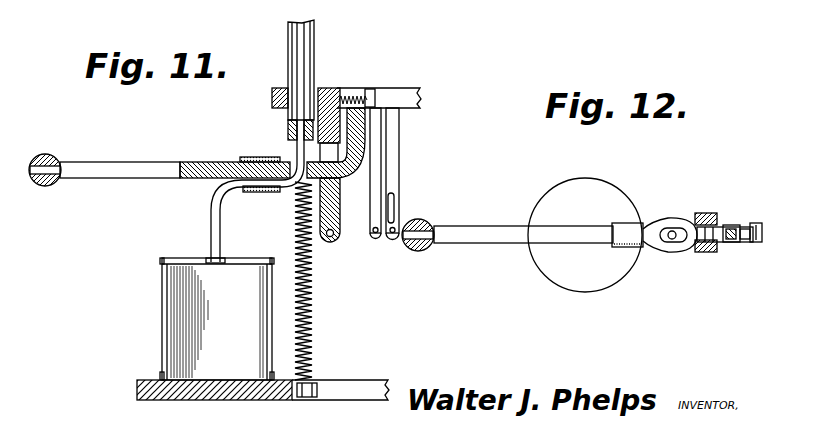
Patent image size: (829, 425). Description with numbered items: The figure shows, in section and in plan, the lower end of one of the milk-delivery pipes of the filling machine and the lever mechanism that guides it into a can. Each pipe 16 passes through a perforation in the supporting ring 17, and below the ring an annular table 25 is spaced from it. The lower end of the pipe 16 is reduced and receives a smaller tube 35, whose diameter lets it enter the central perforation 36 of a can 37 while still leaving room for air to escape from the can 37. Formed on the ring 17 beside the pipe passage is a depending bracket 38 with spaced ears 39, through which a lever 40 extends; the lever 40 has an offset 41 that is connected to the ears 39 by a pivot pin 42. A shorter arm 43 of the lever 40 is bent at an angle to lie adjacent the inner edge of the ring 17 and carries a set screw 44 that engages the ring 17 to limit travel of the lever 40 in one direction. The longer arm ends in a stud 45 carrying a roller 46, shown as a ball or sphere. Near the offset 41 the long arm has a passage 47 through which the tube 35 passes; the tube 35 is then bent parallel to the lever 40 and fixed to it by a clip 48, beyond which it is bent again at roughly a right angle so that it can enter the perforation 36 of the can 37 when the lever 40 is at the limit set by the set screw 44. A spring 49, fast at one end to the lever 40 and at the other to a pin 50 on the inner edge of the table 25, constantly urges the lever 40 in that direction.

In FIG. 11, the pipe 16 is at (291, 57).
In FIG. 11, the ring 17 is at (272, 99).
In FIG. 11, the annular table 25 is at (137, 388).
In FIG. 11, the tube 35 is at (211, 222).
In FIG. 12, the tube 35 is at (676, 228).
In FIG. 11, the central perforation 36 is at (211, 261).
In FIG. 11, the can 37 is at (165, 325).
In FIG. 12, the can 37 is at (573, 292).
In FIG. 11, the depending bracket 38 is at (330, 88).
In FIG. 11, the ears 39 is at (395, 175).
In FIG. 12, the ears 39 is at (716, 223).
In FIG. 11, the lever 40 is at (163, 169).
In FIG. 12, the lever 40 is at (500, 245).
In FIG. 11, the offset 41 is at (335, 205).
In FIG. 11, the pivot pin 42 is at (331, 241).
In FIG. 11, the shorter arm 43 is at (363, 123).
In FIG. 12, the shorter arm 43 is at (735, 244).
In FIG. 11, the set screw 44 is at (371, 92).
In FIG. 12, the set screw 44 is at (756, 224).
In FIG. 11, the stud 45 is at (50, 181).
In FIG. 12, the stud 45 is at (428, 226).
In FIG. 11, the roller 46 is at (44, 156).
In FIG. 12, the roller 46 is at (422, 252).
In FIG. 11, the passage 47 is at (290, 167).
In FIG. 12, the passage 47 is at (675, 242).
In FIG. 11, the clip 48 is at (258, 192).
In FIG. 12, the clip 48 is at (625, 230).
In FIG. 11, the spring 49 is at (312, 305).
In FIG. 11, the pin 50 is at (300, 398).